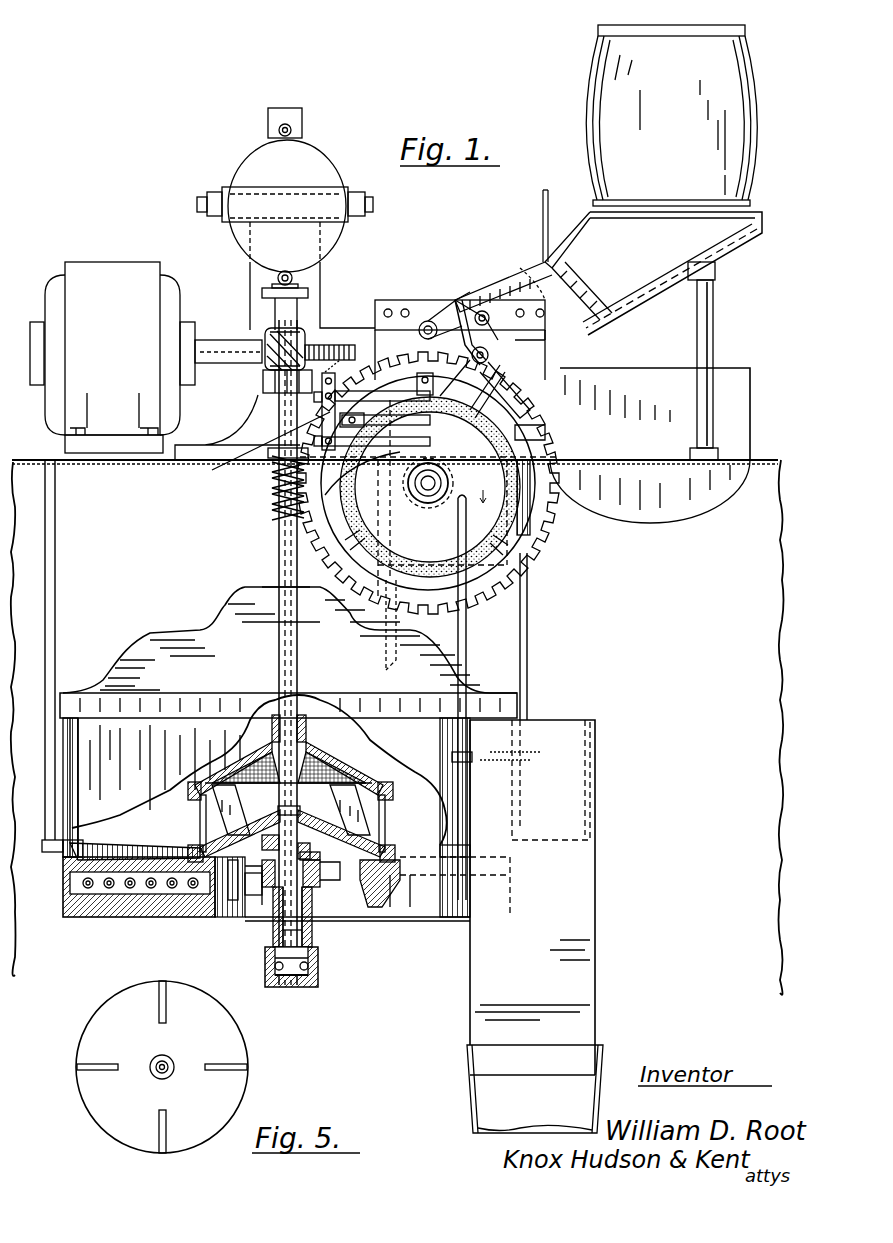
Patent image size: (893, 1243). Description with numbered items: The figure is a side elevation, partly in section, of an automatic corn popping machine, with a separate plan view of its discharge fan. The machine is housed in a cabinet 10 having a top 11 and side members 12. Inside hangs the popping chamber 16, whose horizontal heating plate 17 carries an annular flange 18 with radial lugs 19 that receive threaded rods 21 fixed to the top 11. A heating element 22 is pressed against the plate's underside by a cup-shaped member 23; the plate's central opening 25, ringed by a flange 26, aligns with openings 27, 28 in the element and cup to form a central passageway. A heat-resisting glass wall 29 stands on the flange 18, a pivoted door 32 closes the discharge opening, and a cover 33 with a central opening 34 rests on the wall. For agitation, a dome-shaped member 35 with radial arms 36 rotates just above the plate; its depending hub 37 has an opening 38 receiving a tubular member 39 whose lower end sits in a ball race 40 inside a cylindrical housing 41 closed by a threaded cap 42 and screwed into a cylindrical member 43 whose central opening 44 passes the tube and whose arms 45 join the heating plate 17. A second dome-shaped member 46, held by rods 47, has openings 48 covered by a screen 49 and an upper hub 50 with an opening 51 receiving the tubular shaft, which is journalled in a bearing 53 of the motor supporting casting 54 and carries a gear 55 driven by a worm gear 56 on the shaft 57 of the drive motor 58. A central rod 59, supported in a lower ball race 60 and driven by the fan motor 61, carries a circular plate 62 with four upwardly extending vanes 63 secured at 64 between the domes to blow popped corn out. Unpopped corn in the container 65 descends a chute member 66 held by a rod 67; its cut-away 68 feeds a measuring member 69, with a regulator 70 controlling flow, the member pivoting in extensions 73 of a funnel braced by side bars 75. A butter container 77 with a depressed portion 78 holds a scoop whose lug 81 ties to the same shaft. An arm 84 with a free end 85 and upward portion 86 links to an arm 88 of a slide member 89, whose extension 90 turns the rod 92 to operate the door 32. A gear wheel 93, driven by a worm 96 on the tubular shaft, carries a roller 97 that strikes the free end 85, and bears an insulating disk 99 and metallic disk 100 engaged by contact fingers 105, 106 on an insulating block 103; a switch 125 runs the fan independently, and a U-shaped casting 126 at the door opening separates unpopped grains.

In FIG. 1, the cabinet 10 is at (759, 727).
In FIG. 1, the top 11 is at (395, 446).
In FIG. 1, the side members 12 is at (346, 719).
In FIG. 1, the popping chamber 16 is at (259, 770).
In FIG. 1, the heating plate 17 is at (63, 900).
In FIG. 1, the annular flange 18 is at (64, 862).
In FIG. 1, the lugs 19 is at (50, 852).
In FIG. 1, the rods 21 is at (56, 628).
In FIG. 1, the heating element 22 is at (140, 905).
In FIG. 1, the cup-shaped member 23 is at (218, 906).
In FIG. 1, the vertical opening 25 is at (312, 910).
In FIG. 1, the flange 26 is at (350, 905).
In FIG. 1, the opening 27 is at (378, 907).
In FIG. 1, the opening 28 is at (238, 905).
In FIG. 1, the glass wall 29 is at (78, 748).
In FIG. 1, the door 32 is at (588, 772).
In FIG. 1, the cover 33 is at (158, 632).
In FIG. 1, the central opening 34 is at (272, 589).
In FIG. 1, the dome-shaped member 35 is at (385, 842).
In FIG. 1, the arms 36 is at (125, 850).
In FIG. 1, the hub 37 is at (312, 846).
In FIG. 1, the opening 38 is at (268, 830).
In FIG. 1, the tubular member 39 is at (268, 952).
In FIG. 1, the ball race 40 is at (318, 960).
In FIG. 1, the cylindrical housing 41 is at (312, 892).
In FIG. 1, the cap 42 is at (310, 988).
In FIG. 1, the cylindrical member 43 is at (255, 887).
In FIG. 1, the central opening 44 is at (320, 858).
In FIG. 1, the arms 45 is at (262, 905).
In FIG. 1, the second dome-shaped member 46 is at (332, 792).
In FIG. 1, the rods 47 is at (386, 815).
In FIG. 1, the openings 48 is at (314, 778).
In FIG. 1, the screen 49 is at (240, 765).
In FIG. 1, the hub 50 is at (297, 574).
In FIG. 1, the central opening 51 is at (288, 690).
In FIG. 1, the bearing 53 is at (264, 382).
In FIG. 1, the motor supporting casting 54 is at (312, 316).
In FIG. 1, the gear 55 is at (338, 346).
In FIG. 1, the worm gear 56 is at (268, 330).
In FIG. 1, the shaft 57 is at (210, 340).
In FIG. 1, the motor 58 is at (92, 262).
In FIG. 1, the rod 59 is at (282, 920).
In FIG. 5, the rod 59 is at (168, 1060).
In FIG. 1, the ball race 60 is at (268, 988).
In FIG. 1, the fan motor 61 is at (300, 148).
In FIG. 5, the circular plate 62 is at (238, 1088).
In FIG. 1, the vanes 63 is at (352, 800).
In FIG. 5, the vanes 63 is at (158, 1122).
In FIG. 1, the securing point 64 is at (300, 810).
In FIG. 1, the container 65 is at (602, 75).
In FIG. 1, the member 66 is at (758, 235).
In FIG. 1, the rod 67 is at (713, 334).
In FIG. 1, the cut-away 68 is at (530, 290).
In FIG. 1, the measuring member 69 is at (488, 268).
In FIG. 1, the regulator 70 is at (545, 190).
In FIG. 1, the extensions 73 is at (462, 300).
In FIG. 1, the side bars 75 is at (415, 305).
In FIG. 1, the butter container 77 is at (735, 405).
In FIG. 1, the depressed portion 78 is at (705, 517).
In FIG. 1, the lug 81 is at (445, 305).
In FIG. 1, the arm 84 is at (488, 359).
In FIG. 1, the free end 85 is at (530, 404).
In FIG. 1, the upwardly extending portion 86 is at (500, 325).
In FIG. 1, the arm 88 is at (428, 474).
In FIG. 1, the slide member 89 is at (276, 516).
In FIG. 1, the extension 90 is at (548, 433).
In FIG. 1, the rod 92 is at (541, 636).
In FIG. 1, the gear wheel 93 is at (535, 526).
In FIG. 1, the worm 96 is at (268, 470).
In FIG. 1, the roller 97 is at (417, 388).
In FIG. 1, the insulating disk 99 is at (528, 550).
In FIG. 1, the metallic disk 100 is at (500, 500).
In FIG. 1, the insulating block 103 is at (322, 405).
In FIG. 1, the contact finger 105 is at (430, 421).
In FIG. 1, the contact finger 106 is at (430, 444).
In FIG. 1, the switch 125 is at (249, 453).
In FIG. 1, the U-shaped casting 126 is at (585, 888).